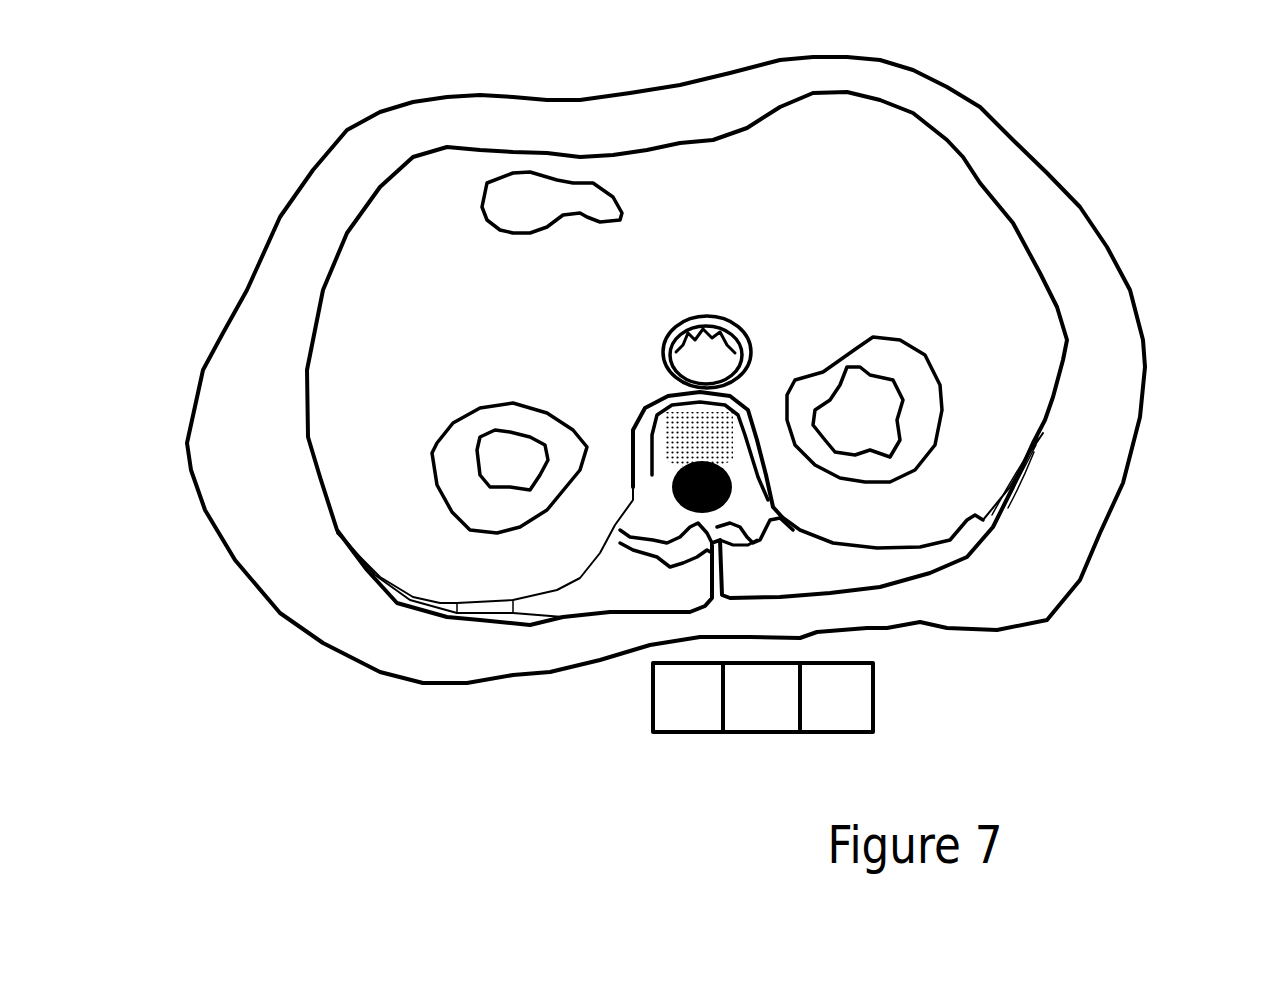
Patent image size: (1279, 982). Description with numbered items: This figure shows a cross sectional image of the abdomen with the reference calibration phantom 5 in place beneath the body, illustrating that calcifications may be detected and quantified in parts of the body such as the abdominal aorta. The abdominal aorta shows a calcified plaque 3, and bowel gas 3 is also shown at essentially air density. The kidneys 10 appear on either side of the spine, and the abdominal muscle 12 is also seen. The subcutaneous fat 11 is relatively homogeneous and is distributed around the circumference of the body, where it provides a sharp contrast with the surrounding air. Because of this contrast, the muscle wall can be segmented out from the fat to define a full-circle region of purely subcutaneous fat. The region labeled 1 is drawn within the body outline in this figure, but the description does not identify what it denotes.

The lesion region of interest 1 is at (547, 207).
The calcified plaque 3 is at (718, 358).
The kidneys 10 is at (867, 418).
The subcutaneous fat 11 is at (1042, 565).
The abdominal muscle 12 is at (1043, 467).
The reference calibration phantom 5 is at (885, 689).